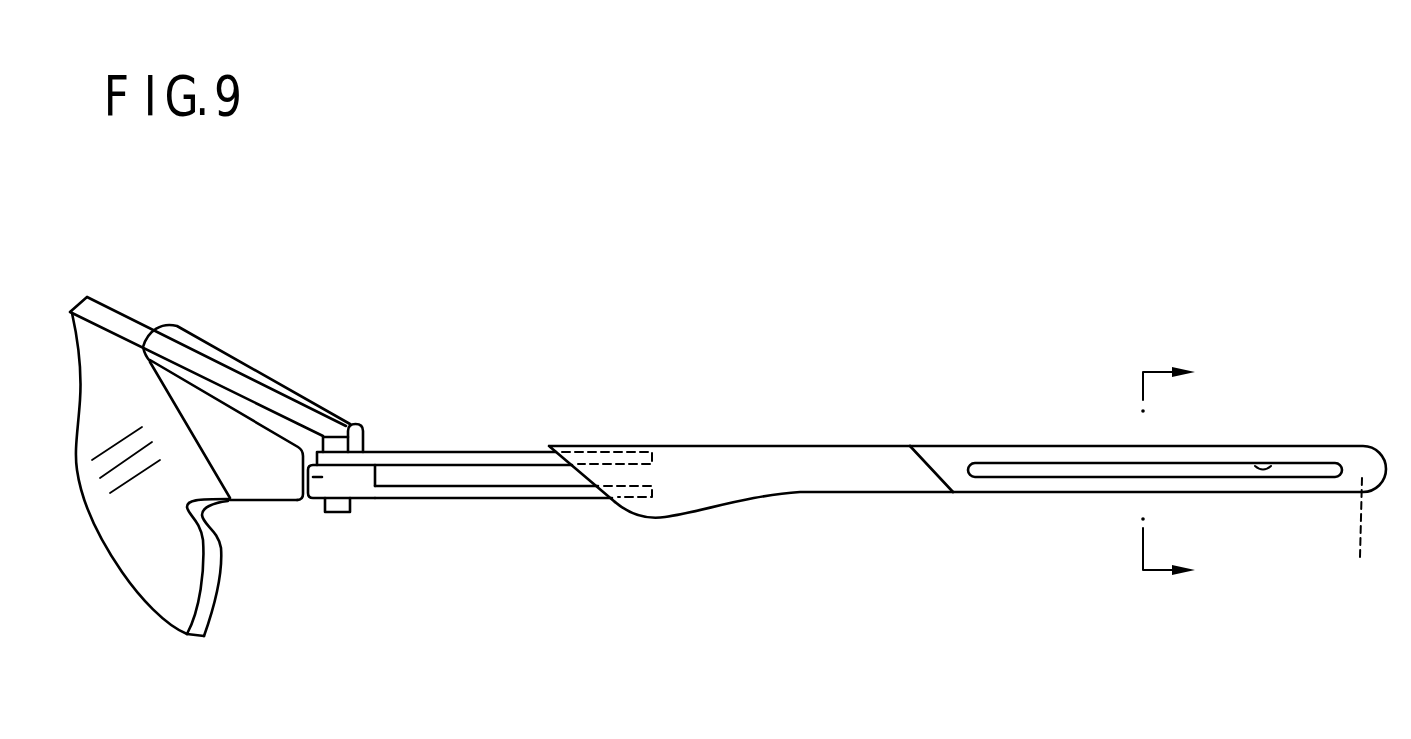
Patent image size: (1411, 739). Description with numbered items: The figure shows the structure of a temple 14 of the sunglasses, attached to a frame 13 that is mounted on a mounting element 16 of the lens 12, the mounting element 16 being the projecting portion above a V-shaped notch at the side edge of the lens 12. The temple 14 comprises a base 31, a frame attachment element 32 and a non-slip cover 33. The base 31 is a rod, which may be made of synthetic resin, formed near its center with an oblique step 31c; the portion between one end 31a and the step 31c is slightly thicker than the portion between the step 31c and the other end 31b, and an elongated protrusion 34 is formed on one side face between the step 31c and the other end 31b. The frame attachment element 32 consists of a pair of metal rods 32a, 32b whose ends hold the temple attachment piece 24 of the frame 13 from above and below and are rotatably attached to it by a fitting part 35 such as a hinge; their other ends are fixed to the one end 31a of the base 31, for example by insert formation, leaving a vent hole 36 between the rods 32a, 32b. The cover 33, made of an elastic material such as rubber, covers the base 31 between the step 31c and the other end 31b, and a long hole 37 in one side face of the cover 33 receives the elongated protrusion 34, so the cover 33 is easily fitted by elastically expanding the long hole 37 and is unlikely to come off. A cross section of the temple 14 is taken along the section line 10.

The section line 10— 10 is at (1166, 469).
The lens 12 is at (166, 569).
The frame 13 is at (257, 376).
The temple 14 is at (880, 345).
The mounting element 16 is at (203, 365).
The temple attachment piece 24 is at (302, 492).
The base 31 is at (702, 463).
The one end 31a is at (657, 507).
The other end 31b is at (1366, 542).
The oblique step 31c is at (933, 477).
The frame attachment element 32 is at (478, 455).
The metal rod 32a is at (418, 460).
The metal rod 32b is at (505, 492).
The non-slip cover 33 is at (973, 448).
The elongated protrusion 34 is at (1048, 470).
The fitting part 35 is at (360, 426).
The vent hole 36 is at (555, 473).
The long hole 37 is at (1263, 467).